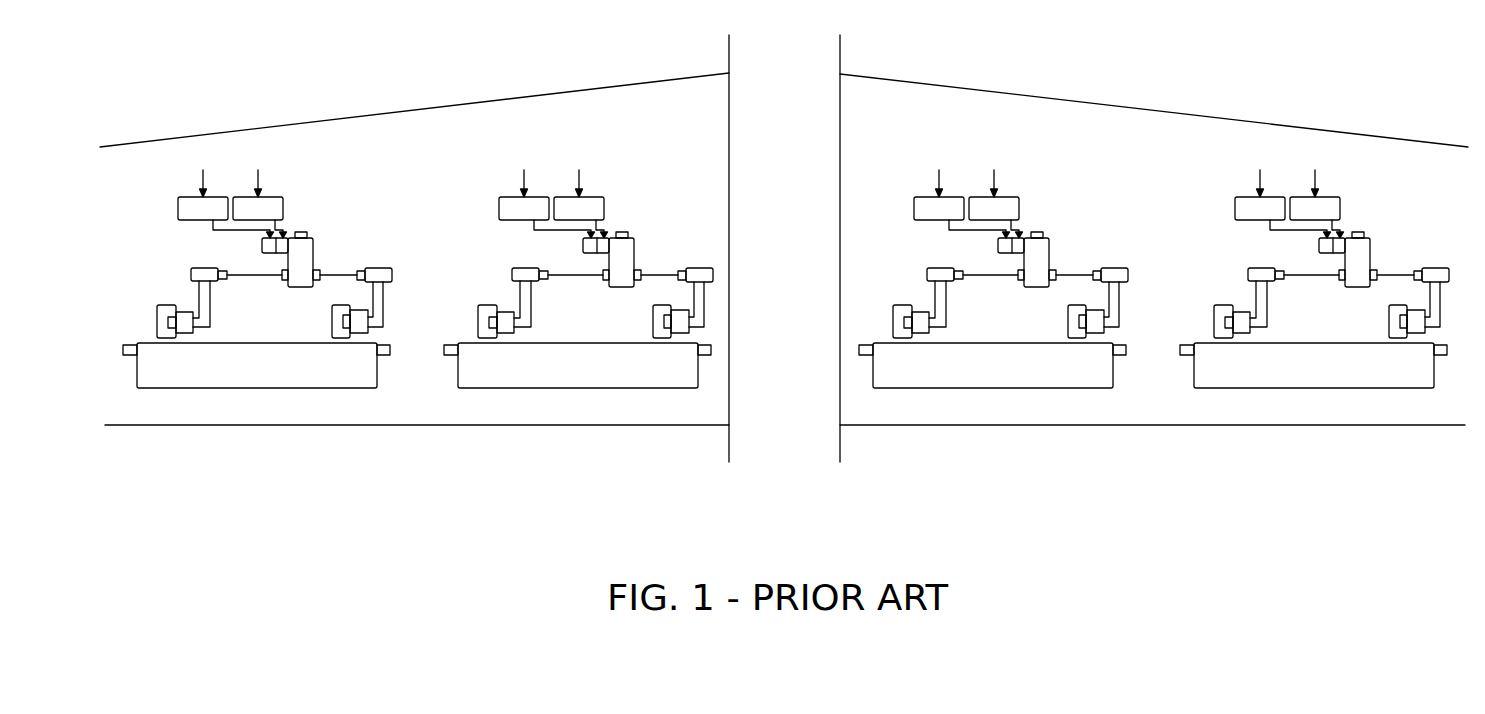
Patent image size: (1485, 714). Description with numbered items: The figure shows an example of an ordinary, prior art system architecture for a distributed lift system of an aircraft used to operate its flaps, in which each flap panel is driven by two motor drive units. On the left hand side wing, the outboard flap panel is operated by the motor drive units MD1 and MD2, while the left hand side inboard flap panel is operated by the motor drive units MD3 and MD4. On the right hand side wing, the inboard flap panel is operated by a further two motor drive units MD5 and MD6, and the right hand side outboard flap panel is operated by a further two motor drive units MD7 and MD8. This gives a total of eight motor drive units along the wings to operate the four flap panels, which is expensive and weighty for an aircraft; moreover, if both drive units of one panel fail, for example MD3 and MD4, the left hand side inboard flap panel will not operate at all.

The motor drive unit MD1 is at (177, 214).
The motor drive unit MD2 is at (283, 205).
The motor drive unit MD3 is at (498, 208).
The motor drive unit MD4 is at (604, 197).
The motor drive unit MD5 is at (913, 208).
The motor drive unit MD6 is at (1020, 198).
The motor drive unit MD7 is at (1238, 196).
The motor drive unit MD8 is at (1333, 197).